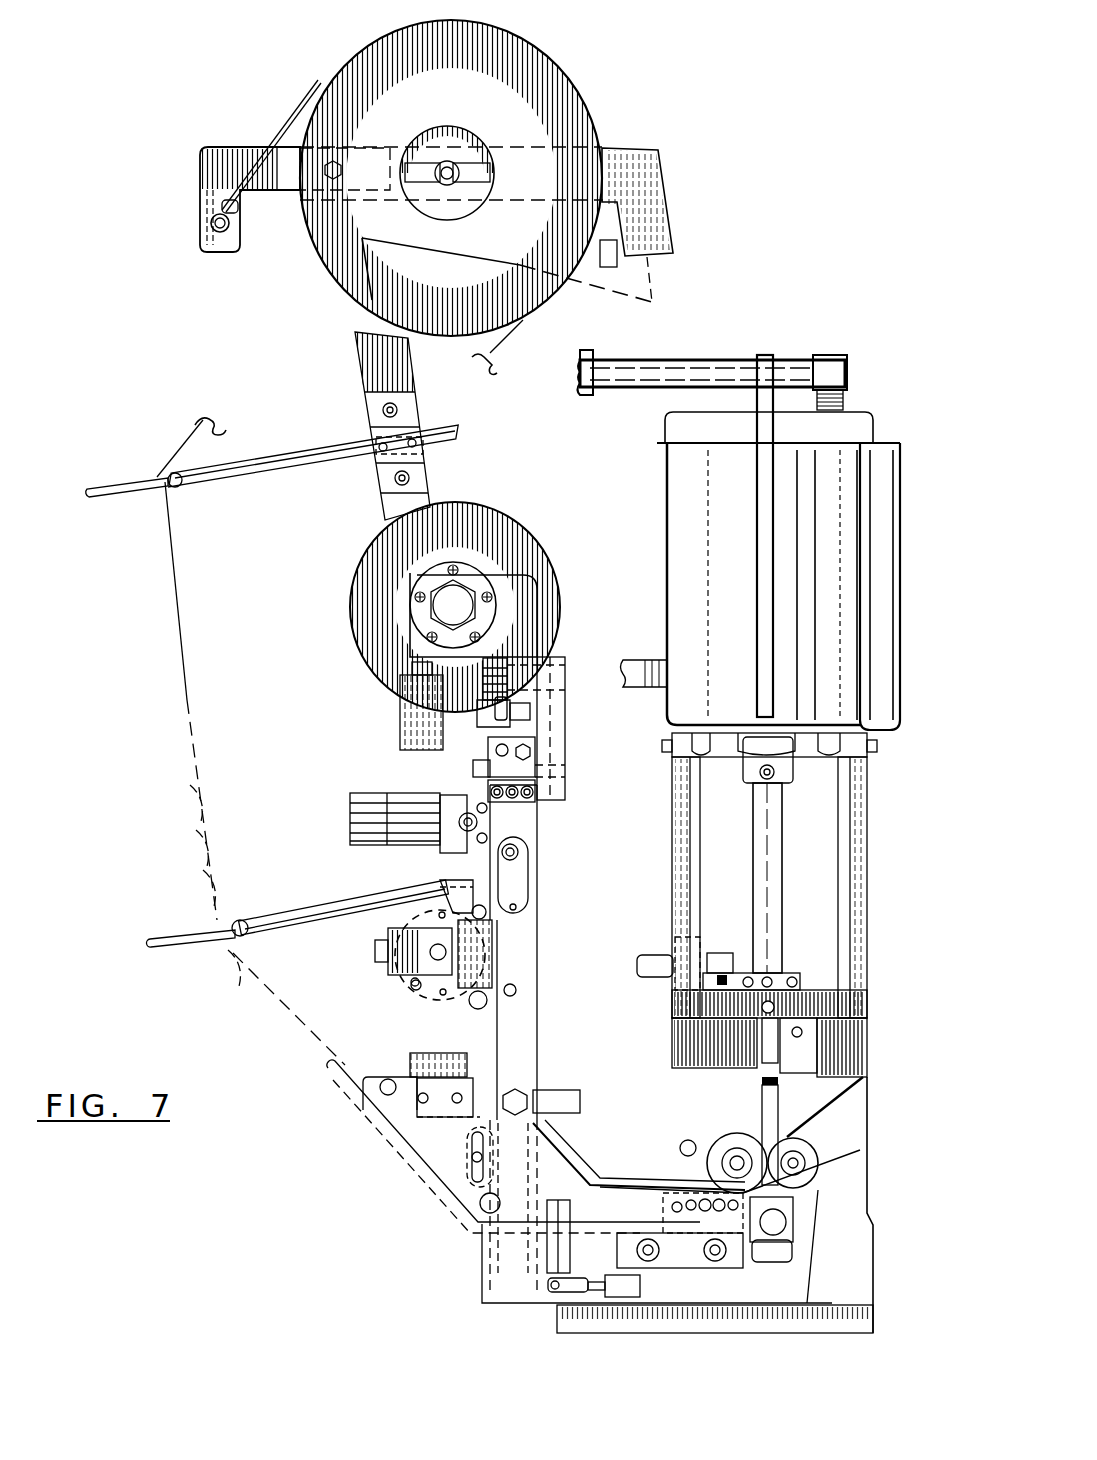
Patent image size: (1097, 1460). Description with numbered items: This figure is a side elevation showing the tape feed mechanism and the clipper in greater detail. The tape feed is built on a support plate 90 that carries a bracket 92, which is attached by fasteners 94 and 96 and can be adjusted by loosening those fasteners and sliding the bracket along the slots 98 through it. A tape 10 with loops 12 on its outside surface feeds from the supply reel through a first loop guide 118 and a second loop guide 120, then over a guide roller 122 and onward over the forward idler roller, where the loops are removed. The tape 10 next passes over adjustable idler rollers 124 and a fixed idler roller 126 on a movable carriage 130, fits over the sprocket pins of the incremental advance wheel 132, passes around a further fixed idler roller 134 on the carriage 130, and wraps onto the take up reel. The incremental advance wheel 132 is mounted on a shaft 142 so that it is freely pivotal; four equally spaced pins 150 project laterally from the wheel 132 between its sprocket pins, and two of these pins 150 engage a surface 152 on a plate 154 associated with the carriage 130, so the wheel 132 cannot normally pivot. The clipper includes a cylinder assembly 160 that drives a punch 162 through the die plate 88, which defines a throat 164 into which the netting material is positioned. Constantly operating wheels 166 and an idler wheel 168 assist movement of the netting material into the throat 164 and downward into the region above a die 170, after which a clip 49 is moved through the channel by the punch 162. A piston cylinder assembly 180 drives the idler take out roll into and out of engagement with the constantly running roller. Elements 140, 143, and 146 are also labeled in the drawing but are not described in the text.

The tape 10 is at (590, 1183).
The loops 12 is at (190, 812).
The clip 49 is at (797, 1217).
The die plate 88 is at (840, 1083).
The support plate 90 is at (733, 1255).
The bracket 92 is at (790, 1188).
The fastener 94 is at (755, 1150).
The fastener 96 is at (618, 1258).
The slots 98 is at (685, 1232).
The first loop guide 118 is at (238, 465).
The second loop guide 120 is at (260, 917).
The guide roller 122 is at (453, 1208).
The adjustable idler rollers 124 is at (470, 1157).
The fixed idler roller 126 is at (518, 915).
The movable carriage 130 is at (535, 865).
The incremental advance wheel 132 is at (413, 997).
The fixed idler roller 134 is at (460, 885).
The clamp block 140 is at (370, 940).
The shaft 142 is at (420, 970).
The slot 143 is at (530, 878).
The gearbox 146 is at (462, 883).
The pins 150 is at (543, 835).
The surface 152 is at (520, 908).
The plate 154 is at (513, 960).
The cylinder assembly 160 is at (885, 480).
The punch 162 is at (766, 863).
The throat 164 is at (803, 1140).
The constantly operating wheels 166 is at (735, 1138).
The idler wheel 168 is at (805, 1163).
The die 170 is at (793, 1258).
The piston cylinder assembly 180 is at (412, 925).